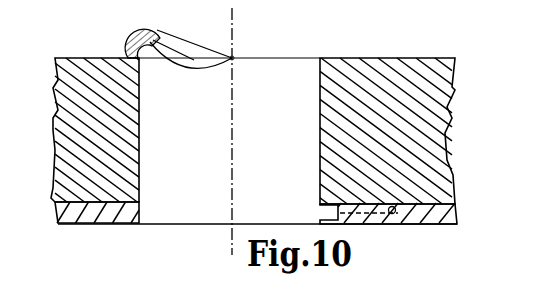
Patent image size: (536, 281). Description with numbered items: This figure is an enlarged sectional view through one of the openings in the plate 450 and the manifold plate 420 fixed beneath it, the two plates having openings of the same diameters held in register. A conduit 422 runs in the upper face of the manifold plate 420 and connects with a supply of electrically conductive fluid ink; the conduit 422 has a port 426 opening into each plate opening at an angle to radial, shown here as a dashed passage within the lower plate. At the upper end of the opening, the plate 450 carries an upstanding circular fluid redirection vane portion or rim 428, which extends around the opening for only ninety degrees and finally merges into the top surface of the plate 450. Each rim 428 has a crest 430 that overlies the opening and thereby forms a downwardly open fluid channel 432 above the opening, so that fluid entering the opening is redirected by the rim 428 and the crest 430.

The manifold plate 420 is at (100, 226).
The conduit 422 is at (362, 207).
The port 426 is at (320, 209).
The fluid redirection vane portion or rim 428 is at (132, 46).
The crest 430 is at (158, 32).
The fluid channel 432 is at (232, 58).
The plate 450 is at (412, 70).